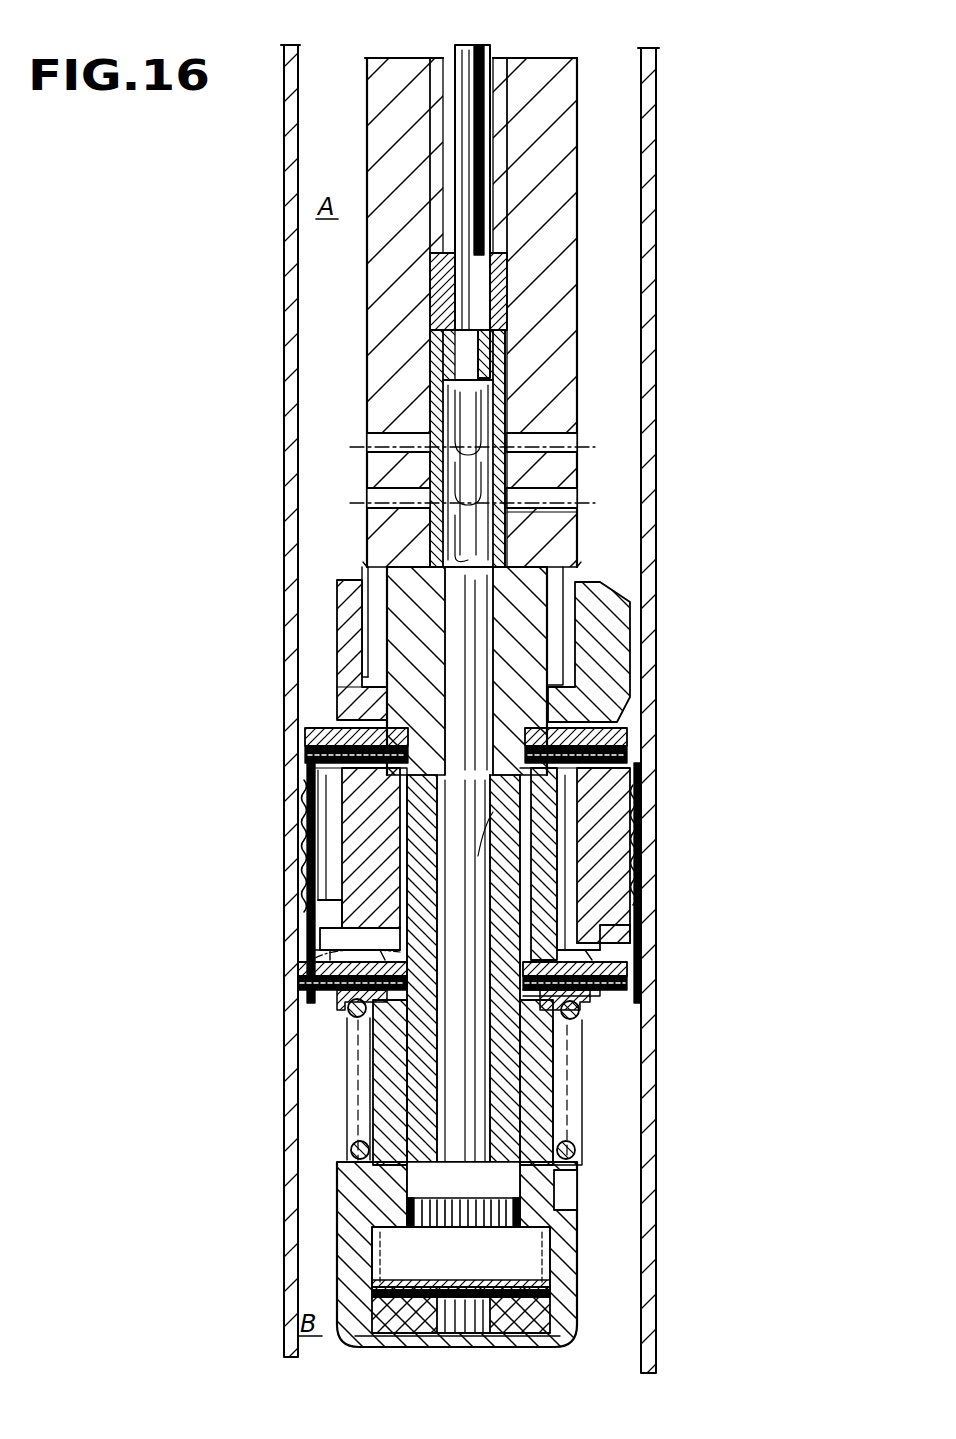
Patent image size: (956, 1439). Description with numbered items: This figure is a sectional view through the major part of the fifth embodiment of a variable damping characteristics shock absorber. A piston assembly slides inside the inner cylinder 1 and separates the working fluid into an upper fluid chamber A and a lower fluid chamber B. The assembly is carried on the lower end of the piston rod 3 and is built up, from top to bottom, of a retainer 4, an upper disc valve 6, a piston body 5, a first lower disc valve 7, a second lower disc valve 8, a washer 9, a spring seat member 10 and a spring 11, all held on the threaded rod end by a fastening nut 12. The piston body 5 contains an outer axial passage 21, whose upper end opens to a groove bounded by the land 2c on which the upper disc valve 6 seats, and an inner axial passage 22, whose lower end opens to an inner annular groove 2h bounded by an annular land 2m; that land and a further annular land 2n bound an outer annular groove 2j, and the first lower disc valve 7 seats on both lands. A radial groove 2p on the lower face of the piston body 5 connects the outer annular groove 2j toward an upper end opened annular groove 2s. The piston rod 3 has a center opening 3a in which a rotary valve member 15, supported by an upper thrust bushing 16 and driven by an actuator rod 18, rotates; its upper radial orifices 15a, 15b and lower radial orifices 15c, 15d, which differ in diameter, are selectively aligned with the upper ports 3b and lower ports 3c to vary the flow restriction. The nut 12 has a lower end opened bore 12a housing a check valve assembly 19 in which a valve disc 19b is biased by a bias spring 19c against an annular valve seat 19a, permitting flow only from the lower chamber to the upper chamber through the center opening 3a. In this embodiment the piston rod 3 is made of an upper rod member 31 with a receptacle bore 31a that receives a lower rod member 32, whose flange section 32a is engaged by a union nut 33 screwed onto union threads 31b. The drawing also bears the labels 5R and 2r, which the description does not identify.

The inner cylinder 1 is at (283, 283).
The piston rod 3 is at (578, 263).
The center opening 3a is at (478, 1003).
The upper ports 3b is at (368, 437).
The lower ports 3c is at (469, 849).
The retainer 4 is at (330, 735).
The piston body 5 is at (345, 705).
The passage 5R is at (585, 512).
The upper disc valve 6 is at (320, 755).
The first lower disc valve 7 is at (330, 965).
The second lower disc valve 8 is at (340, 985).
The washer 9 is at (360, 1040).
The spring seat member 10 is at (350, 1000).
The spring 11 is at (352, 1150).
The fastening nut 12 is at (355, 1250).
The lower end opened bore 12a is at (385, 1300).
The rotary valve member 15 is at (505, 335).
The upper radial orifice 15a is at (432, 422).
The upper radial orifice 15b is at (510, 420).
The lower radial orifice 15c is at (432, 497).
The lower radial orifice 15d is at (510, 495).
The upper thrust bushing 16 is at (440, 297).
The actuator rod 18 is at (480, 96).
The check valve assembly 19 is at (562, 1268).
The annular valve seat 19a is at (425, 1325).
The valve disc 19b is at (470, 1287).
The bias spring 19c is at (385, 1292).
The outer axial passage 21 is at (335, 815).
The inner axial passage 22 is at (570, 857).
The land 2c is at (303, 790).
The inner annular groove 2h is at (588, 1003).
The outer annular groove 2j is at (600, 955).
The annular land 2m is at (590, 992).
The annular land 2n is at (600, 980).
The radial groove 2p is at (300, 945).
The cylinder portion 2r is at (537, 817).
The annular groove 2s is at (345, 905).
The upper rod member 31 is at (568, 200).
The receptacle bore 31a is at (380, 603).
The union threads 31b is at (630, 695).
The lower rod member 32 is at (535, 597).
The flange section 32a is at (372, 678).
The union nut 33 is at (617, 655).